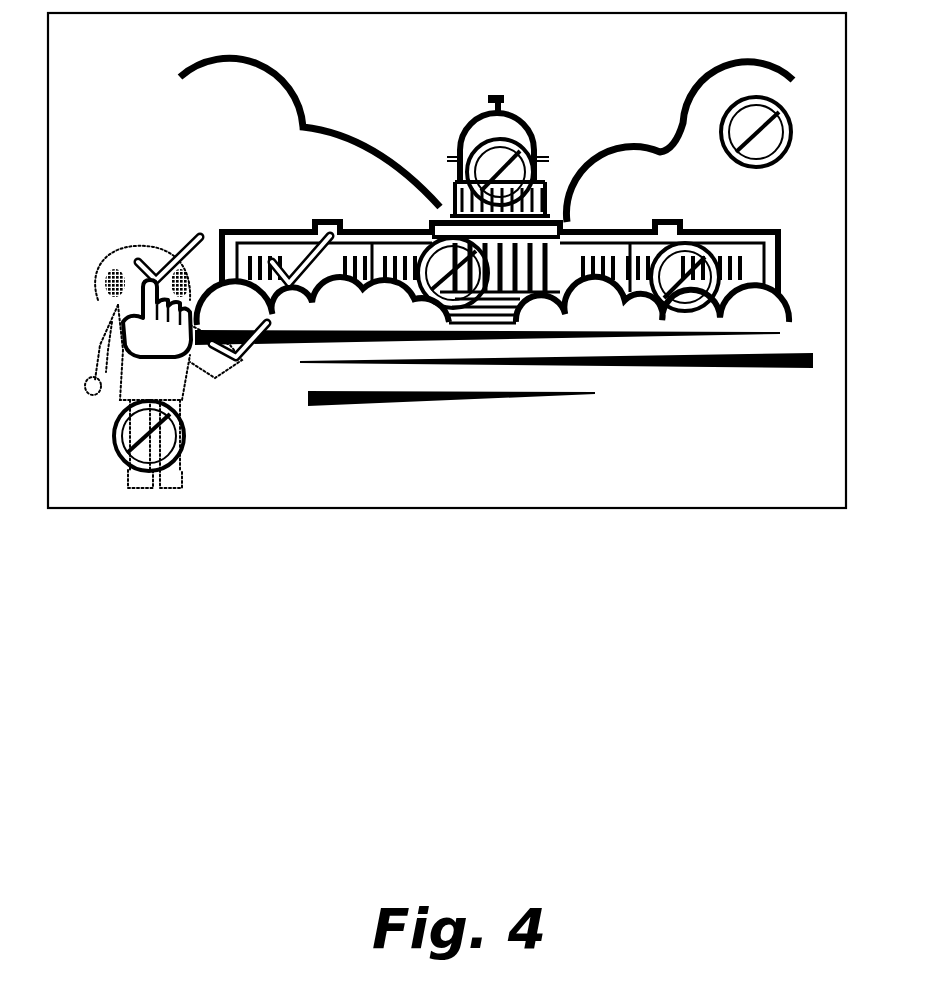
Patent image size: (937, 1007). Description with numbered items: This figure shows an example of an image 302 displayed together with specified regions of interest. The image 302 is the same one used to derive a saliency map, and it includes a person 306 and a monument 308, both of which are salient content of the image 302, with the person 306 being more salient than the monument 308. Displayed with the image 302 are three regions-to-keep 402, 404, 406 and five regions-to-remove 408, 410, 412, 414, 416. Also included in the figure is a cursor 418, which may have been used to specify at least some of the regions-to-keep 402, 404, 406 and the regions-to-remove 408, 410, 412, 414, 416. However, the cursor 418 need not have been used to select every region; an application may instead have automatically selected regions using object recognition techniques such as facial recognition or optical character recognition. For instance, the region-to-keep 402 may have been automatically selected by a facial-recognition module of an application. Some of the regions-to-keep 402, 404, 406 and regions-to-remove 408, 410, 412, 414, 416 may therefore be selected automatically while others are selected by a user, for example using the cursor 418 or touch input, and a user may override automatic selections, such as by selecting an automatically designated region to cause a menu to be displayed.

The image 302 is at (122, 60).
The person 306 is at (118, 265).
The monument 308 is at (497, 128).
The region-to-keep 402 is at (188, 250).
The region-to-keep 404 is at (298, 262).
The region-to-keep 406 is at (242, 358).
The region-to-remove 408 is at (142, 467).
The region-to-remove 410 is at (440, 307).
The region-to-remove 412 is at (465, 168).
The region-to-remove 414 is at (727, 140).
The region-to-remove 416 is at (664, 298).
The cursor 418 is at (163, 345).